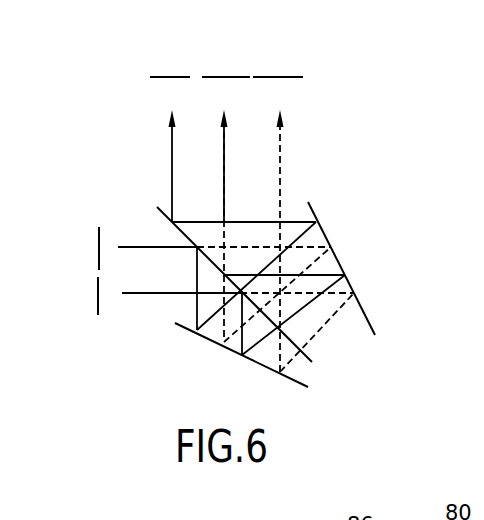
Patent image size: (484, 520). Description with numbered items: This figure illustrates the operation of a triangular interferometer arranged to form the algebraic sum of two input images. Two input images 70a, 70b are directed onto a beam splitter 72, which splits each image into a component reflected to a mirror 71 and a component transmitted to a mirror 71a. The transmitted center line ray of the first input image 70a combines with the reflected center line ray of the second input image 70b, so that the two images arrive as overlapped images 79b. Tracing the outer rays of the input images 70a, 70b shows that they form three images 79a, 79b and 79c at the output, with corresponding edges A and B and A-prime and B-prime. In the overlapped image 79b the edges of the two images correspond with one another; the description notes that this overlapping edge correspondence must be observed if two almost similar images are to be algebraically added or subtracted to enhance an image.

The input image 70a is at (102, 232).
The input image 70b is at (97, 305).
The mirror 71 is at (307, 385).
The mirror 71a is at (352, 285).
The beam splitter 72 is at (310, 357).
The image 79a is at (170, 77).
The overlapped images 79b is at (225, 77).
The image 79c is at (280, 77).